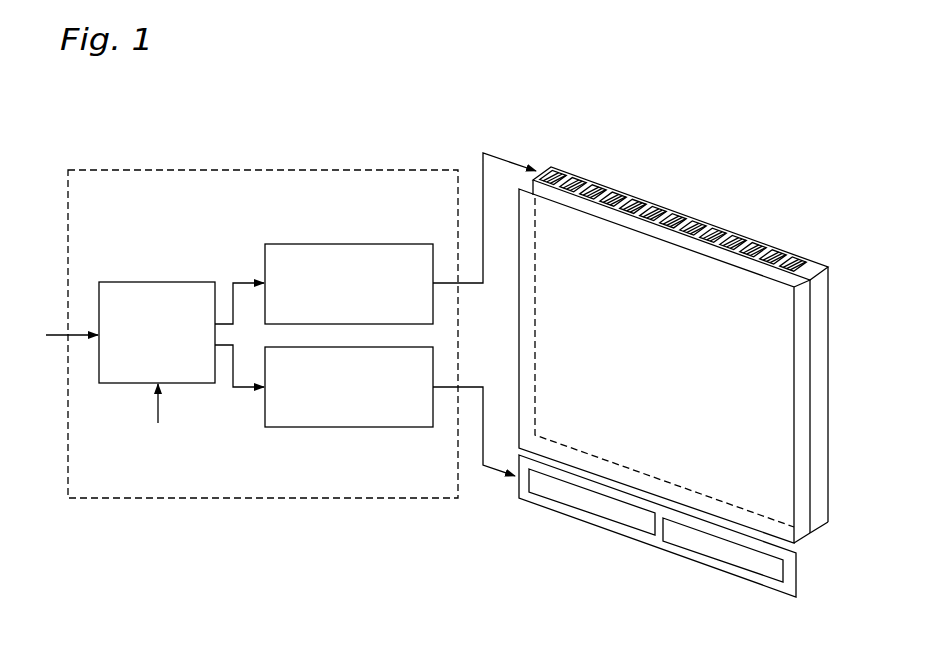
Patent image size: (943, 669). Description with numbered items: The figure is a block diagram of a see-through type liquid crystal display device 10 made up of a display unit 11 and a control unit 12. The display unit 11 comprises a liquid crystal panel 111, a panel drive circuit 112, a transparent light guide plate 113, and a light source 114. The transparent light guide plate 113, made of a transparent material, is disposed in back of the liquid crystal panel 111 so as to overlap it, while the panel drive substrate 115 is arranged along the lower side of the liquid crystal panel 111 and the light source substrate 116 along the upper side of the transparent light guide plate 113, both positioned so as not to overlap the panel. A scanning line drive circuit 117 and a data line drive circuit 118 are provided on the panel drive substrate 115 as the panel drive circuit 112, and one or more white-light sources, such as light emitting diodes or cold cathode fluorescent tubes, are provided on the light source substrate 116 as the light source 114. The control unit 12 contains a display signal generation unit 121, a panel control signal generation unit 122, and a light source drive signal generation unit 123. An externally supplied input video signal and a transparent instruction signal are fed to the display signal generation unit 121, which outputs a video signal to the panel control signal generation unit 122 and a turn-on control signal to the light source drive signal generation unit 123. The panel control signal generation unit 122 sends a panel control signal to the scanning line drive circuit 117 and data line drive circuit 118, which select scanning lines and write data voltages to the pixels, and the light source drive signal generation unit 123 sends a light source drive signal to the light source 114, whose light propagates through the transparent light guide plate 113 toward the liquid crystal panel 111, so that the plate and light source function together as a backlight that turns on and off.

The display device 10 is at (397, 112).
The display unit 11 is at (570, 581).
The control unit 12 is at (239, 170).
The liquid crystal panel 111 is at (796, 432).
The panel drive circuit 112 is at (667, 610).
The transparent light guide plate 113 is at (829, 389).
The light source 114 is at (680, 220).
The panel drive substrate 115 is at (550, 510).
The light source substrate 116 is at (746, 203).
The scanning line drive circuit 117 is at (632, 528).
The data line drive circuit 118 is at (703, 552).
The display signal generation unit 121 is at (156, 282).
The panel control signal generation unit 122 is at (350, 428).
The light source drive signal generation unit 123 is at (349, 244).